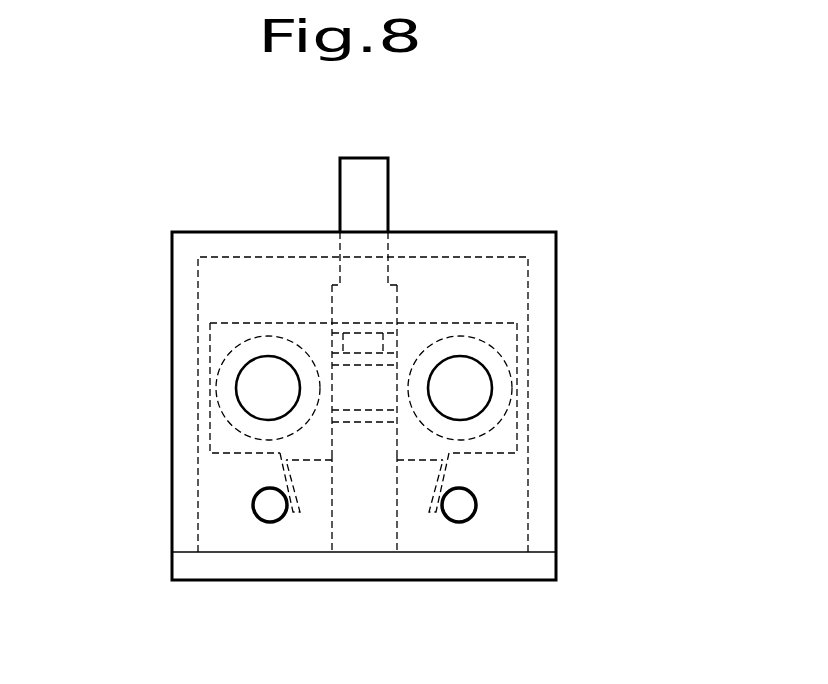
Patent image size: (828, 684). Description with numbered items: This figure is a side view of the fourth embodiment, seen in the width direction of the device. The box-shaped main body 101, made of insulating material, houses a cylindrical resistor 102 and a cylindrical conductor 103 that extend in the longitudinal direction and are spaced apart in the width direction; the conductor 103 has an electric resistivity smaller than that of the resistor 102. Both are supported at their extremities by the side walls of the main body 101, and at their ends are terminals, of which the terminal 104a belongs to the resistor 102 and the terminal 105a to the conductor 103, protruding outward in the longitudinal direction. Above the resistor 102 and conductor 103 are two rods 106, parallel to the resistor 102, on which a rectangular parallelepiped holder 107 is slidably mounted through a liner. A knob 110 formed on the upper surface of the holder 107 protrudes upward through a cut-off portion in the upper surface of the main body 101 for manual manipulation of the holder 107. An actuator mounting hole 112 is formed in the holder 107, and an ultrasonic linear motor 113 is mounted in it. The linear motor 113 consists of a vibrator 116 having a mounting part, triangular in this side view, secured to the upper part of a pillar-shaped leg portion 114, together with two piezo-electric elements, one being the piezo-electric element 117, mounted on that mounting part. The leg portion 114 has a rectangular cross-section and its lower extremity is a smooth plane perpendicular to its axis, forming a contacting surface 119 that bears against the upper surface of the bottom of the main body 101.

The main body of the device 101 is at (500, 243).
The resistor 102 is at (251, 557).
The conductor 103 is at (480, 557).
The terminal 104a is at (268, 508).
The terminal 105a is at (458, 508).
The rod 106 is at (573, 397).
The holder 107 is at (228, 322).
The knob 110 is at (348, 189).
The actuator mounting hole 112 is at (338, 395).
The ultrasonic linear motor 113 is at (407, 321).
The leg portion 114 is at (395, 510).
The vibrator 116 is at (325, 500).
The piezo-electric element 117 is at (388, 302).
The contacting surface 119 is at (358, 552).